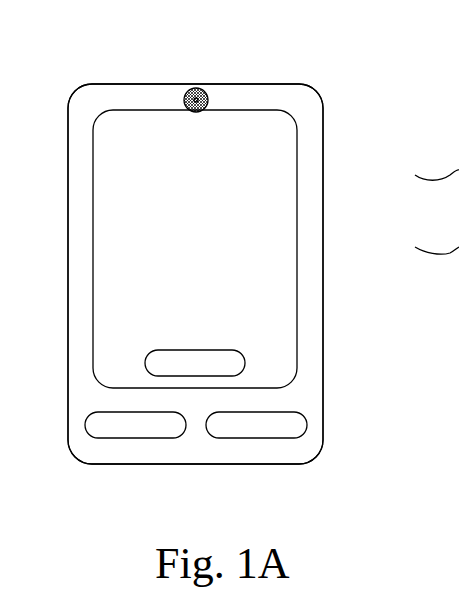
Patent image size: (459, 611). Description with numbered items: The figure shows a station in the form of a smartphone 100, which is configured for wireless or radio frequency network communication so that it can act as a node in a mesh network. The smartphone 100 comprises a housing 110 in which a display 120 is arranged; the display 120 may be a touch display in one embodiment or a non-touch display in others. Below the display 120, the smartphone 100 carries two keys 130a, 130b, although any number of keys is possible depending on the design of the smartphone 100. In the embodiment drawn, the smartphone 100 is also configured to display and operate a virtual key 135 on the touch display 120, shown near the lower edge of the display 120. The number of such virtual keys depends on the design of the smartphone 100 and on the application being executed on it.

The smartphone 100 is at (86, 68).
The housing 110 is at (323, 188).
The display 120 is at (297, 247).
The virtual key 135 is at (245, 363).
The key 130a is at (132, 438).
The key 130b is at (307, 425).